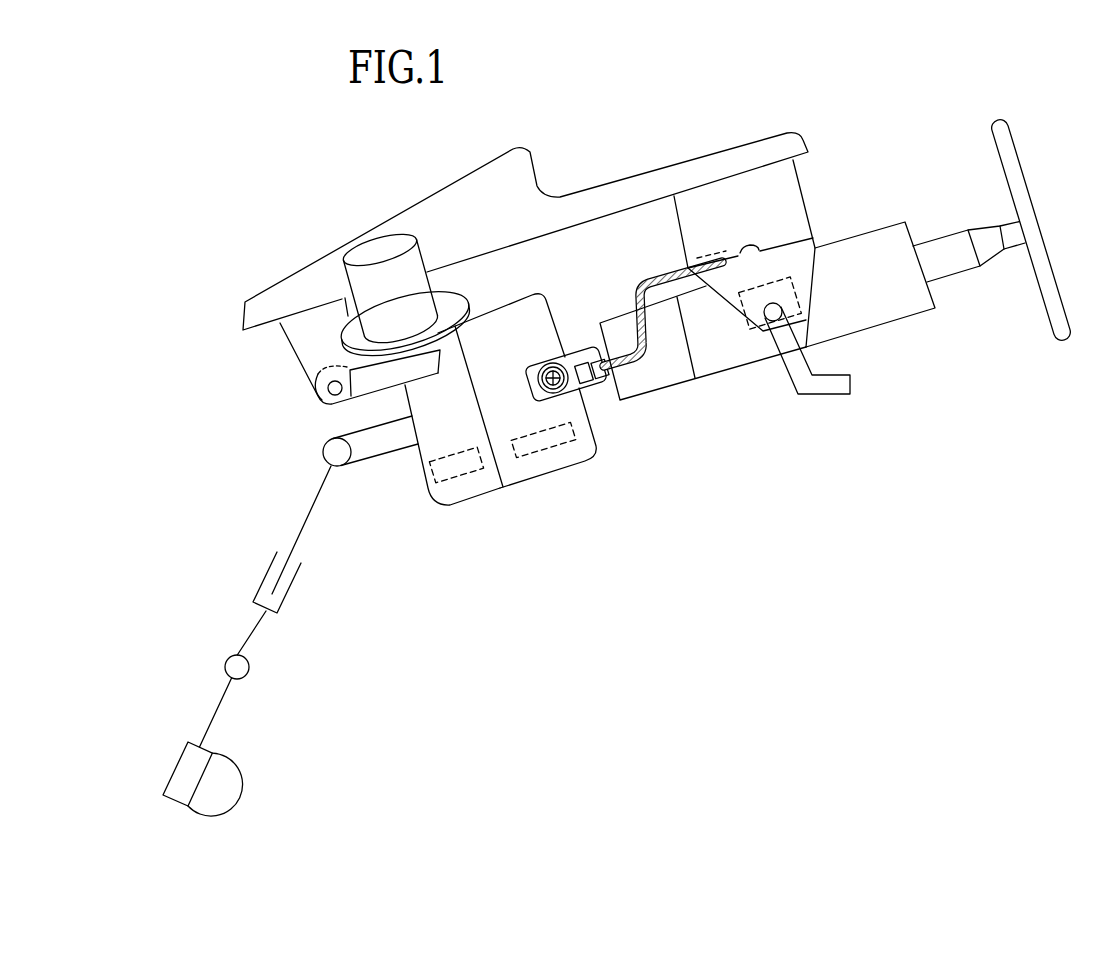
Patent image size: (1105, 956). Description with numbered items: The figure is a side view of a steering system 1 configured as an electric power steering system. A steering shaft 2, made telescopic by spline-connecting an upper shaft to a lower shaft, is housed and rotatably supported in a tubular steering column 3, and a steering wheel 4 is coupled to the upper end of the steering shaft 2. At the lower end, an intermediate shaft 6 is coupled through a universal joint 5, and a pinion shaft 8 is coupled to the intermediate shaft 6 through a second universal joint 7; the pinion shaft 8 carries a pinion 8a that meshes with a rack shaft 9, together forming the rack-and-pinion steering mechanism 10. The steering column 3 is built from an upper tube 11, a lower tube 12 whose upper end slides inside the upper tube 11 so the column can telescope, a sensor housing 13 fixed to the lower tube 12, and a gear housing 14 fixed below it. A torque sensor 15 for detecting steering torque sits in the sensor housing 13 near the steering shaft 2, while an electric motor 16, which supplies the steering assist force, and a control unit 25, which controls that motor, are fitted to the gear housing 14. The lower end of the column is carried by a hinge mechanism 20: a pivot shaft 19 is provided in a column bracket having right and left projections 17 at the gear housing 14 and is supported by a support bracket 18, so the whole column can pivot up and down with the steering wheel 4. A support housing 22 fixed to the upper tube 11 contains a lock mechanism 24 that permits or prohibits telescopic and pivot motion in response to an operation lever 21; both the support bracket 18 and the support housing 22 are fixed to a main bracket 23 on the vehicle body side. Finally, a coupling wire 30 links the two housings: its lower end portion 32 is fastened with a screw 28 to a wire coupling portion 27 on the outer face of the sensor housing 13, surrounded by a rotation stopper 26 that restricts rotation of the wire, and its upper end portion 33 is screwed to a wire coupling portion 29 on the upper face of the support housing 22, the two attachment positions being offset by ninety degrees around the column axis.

The steering system 1 is at (580, 146).
The steering shaft 2 is at (940, 245).
The steering column 3 is at (697, 414).
The steering wheel 4 is at (1020, 153).
The universal joint 5 is at (325, 453).
The intermediate shaft 6 is at (305, 522).
The universal joint 7 is at (250, 669).
The pinion shaft 8 is at (222, 700).
The pinion 8a is at (178, 770).
The rack shaft 9 is at (242, 781).
The steering mechanism 10 is at (243, 810).
The upper tube 11 is at (843, 256).
The lower tube 12 is at (622, 401).
The sensor housing 13 is at (549, 478).
The gear housing 14 is at (469, 503).
The torque sensor 15 is at (535, 458).
The electric motor 16 is at (375, 250).
The projections 17 is at (370, 384).
The support bracket 18 is at (290, 333).
The pivot shaft 19 is at (328, 388).
The hinge mechanism 20 is at (178, 400).
The operation lever 21 is at (823, 386).
The support housing 22 is at (722, 318).
The main bracket 23 is at (488, 183).
The lock mechanism 24 is at (800, 293).
The control unit 25 is at (456, 492).
The rotation stopper 26 is at (540, 358).
The wire coupling portion 27 is at (560, 358).
The screw 28 is at (527, 378).
The wire coupling portion 29 is at (741, 244).
The coupling wire 30 is at (630, 283).
The lower end portion 32 is at (574, 405).
The upper end portion 33 is at (748, 236).